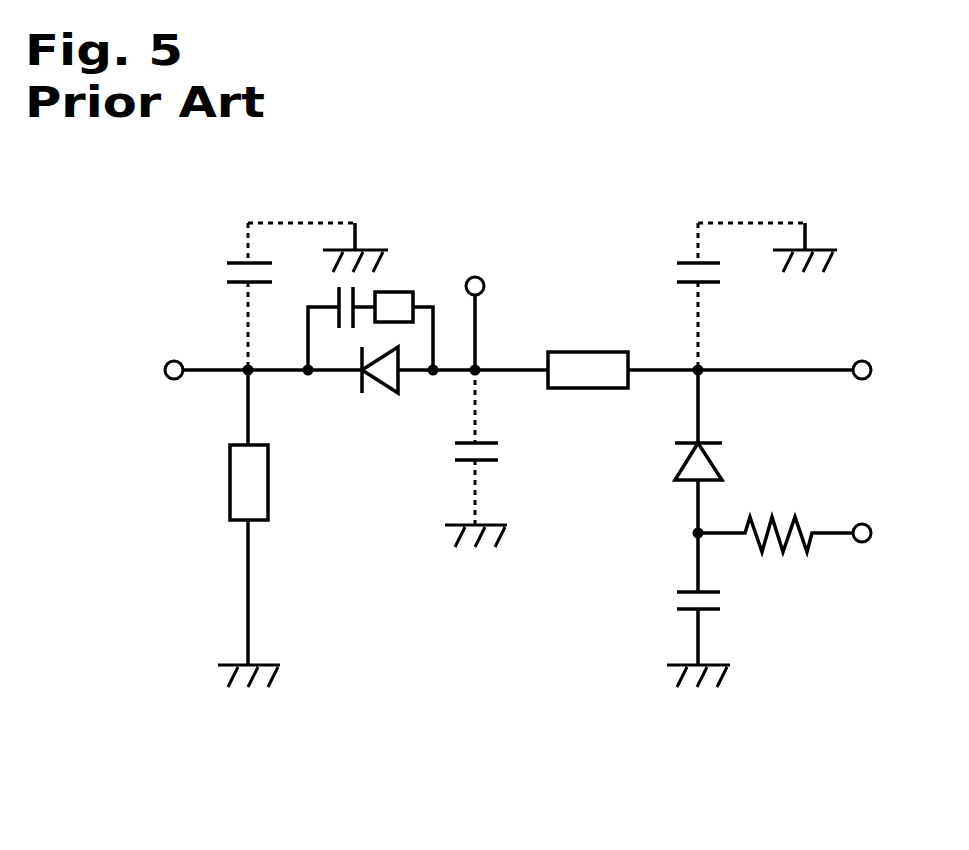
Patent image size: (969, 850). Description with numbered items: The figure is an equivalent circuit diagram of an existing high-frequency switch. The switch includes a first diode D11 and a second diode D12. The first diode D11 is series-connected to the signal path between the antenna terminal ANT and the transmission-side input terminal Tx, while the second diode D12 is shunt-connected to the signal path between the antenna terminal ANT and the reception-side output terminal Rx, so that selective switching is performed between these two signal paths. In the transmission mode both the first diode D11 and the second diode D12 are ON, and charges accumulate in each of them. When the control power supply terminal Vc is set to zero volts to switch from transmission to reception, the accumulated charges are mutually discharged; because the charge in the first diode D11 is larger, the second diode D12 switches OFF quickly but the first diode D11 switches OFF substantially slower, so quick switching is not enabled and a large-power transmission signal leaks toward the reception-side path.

The first diode D11 is at (372, 386).
The second diode D12 is at (683, 458).
The antenna terminal ANT is at (484, 282).
The transmission-side input terminal Tx is at (170, 379).
The reception-side output terminal Rx is at (862, 380).
The control power supply terminal Vc is at (885, 534).